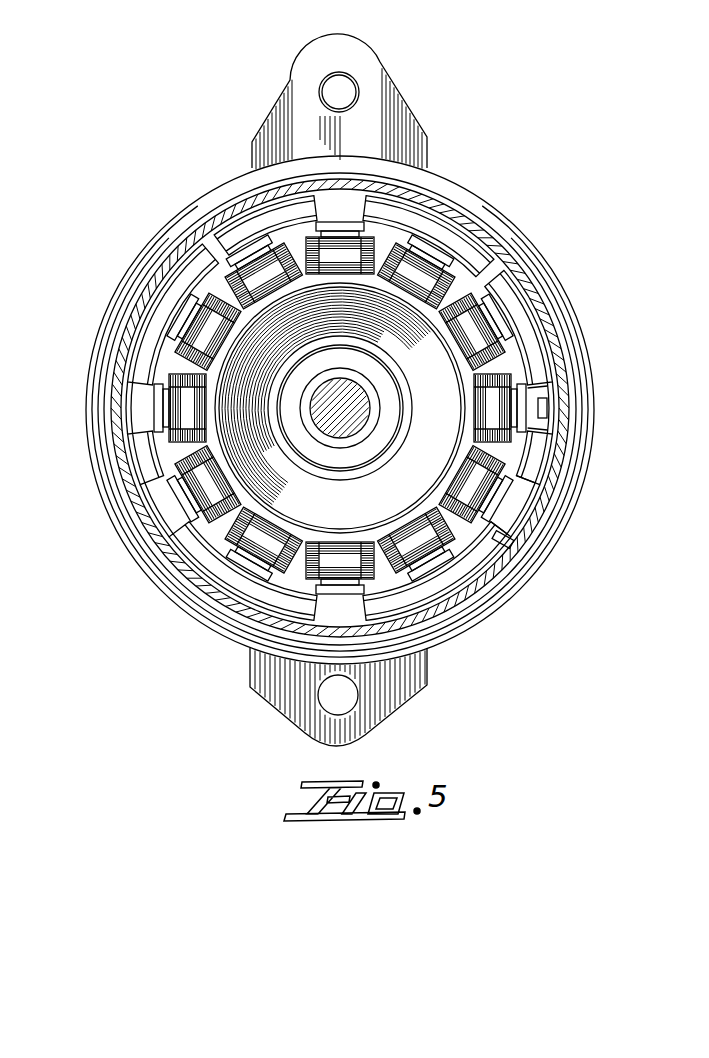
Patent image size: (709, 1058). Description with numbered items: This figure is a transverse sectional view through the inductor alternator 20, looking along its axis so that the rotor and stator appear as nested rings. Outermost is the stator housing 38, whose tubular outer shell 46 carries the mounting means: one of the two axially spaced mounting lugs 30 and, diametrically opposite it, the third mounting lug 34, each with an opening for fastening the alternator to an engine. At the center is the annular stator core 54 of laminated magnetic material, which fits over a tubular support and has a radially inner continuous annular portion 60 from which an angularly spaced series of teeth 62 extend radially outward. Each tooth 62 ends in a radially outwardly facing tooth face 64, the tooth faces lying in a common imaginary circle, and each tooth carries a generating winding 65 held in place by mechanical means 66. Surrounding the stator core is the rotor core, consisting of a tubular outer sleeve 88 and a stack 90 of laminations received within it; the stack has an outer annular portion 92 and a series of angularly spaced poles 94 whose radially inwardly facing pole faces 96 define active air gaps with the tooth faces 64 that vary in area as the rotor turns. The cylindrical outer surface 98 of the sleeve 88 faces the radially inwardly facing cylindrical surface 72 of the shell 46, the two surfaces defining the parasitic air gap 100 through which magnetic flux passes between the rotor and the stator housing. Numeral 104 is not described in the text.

The inductor alternator 20 is at (490, 183).
The mounting lug 30 is at (411, 703).
The third mounting lug 34 is at (386, 73).
The stator housing 38 is at (438, 174).
The tubular outer shell 46 is at (237, 180).
The stator core 54 is at (340, 427).
The radially inner continuous annular portion 60 is at (362, 525).
The stator tooth 62 is at (158, 400).
The tooth face 64 is at (187, 498).
The generating winding 65 is at (492, 399).
The mechanical means 66 is at (170, 450).
The cylindrical surface 72 is at (480, 226).
The tubular outer sleeve 88 is at (521, 264).
The lamination stack 90 is at (548, 393).
The outer annular portion 92 is at (546, 486).
The rotor pole 94 is at (552, 404).
The pole face 96 is at (553, 419).
The outer surface of the sleeve 98 is at (529, 238).
The parasitic air gap 100 is at (492, 231).
The stator ring segment 104 is at (516, 336).